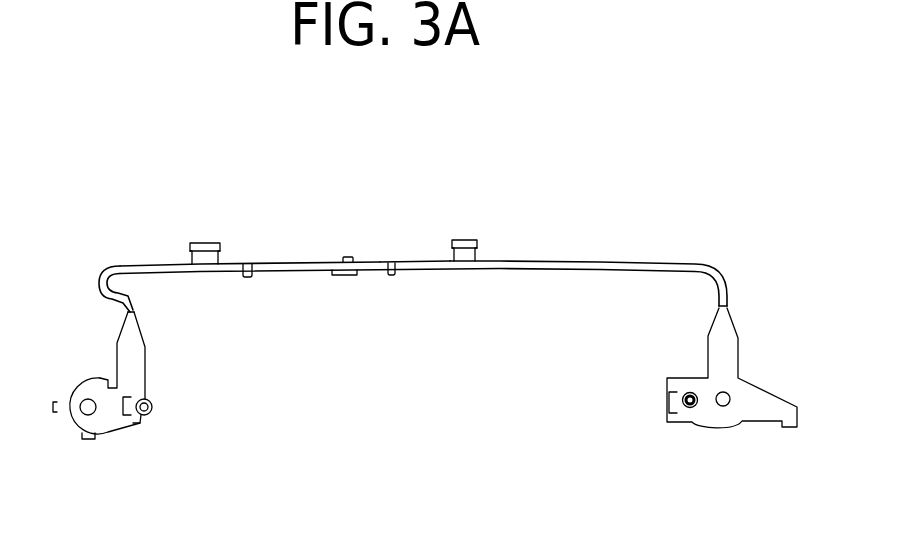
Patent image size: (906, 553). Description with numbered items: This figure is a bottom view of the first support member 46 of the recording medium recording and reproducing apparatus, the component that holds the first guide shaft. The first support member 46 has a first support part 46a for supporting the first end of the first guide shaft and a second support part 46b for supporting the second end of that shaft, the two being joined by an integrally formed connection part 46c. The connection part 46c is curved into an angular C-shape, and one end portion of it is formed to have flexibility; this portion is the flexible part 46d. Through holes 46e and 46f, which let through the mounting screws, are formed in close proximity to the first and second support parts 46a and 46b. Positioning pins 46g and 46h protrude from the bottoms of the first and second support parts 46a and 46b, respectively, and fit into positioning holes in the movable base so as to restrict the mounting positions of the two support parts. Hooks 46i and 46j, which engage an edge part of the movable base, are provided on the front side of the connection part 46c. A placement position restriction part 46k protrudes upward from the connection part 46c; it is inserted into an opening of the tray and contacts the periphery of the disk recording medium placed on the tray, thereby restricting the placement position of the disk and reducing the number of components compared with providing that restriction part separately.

The first support member 46 is at (401, 245).
The first support part 46a is at (715, 374).
The second support part 46b is at (140, 379).
The connection part 46c is at (415, 260).
The flexible part 46d is at (104, 281).
The through hole 46e is at (729, 393).
The through hole 46f is at (84, 399).
The positioning pin 46g is at (692, 408).
The positioning pin 46h is at (157, 403).
The hook 46i is at (465, 238).
The hook 46j is at (205, 243).
The placement position restriction part 46k is at (347, 275).